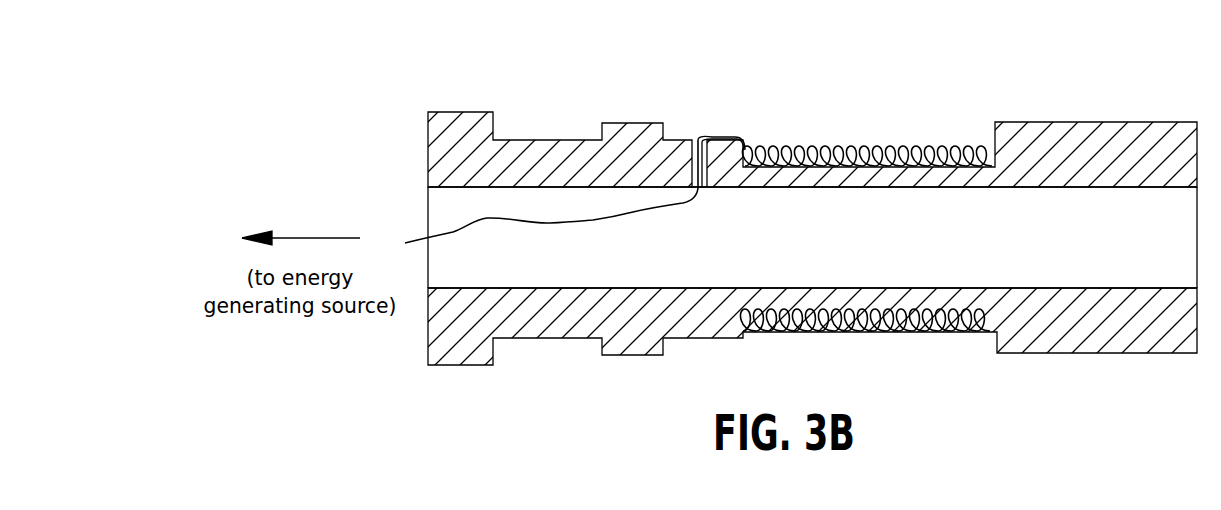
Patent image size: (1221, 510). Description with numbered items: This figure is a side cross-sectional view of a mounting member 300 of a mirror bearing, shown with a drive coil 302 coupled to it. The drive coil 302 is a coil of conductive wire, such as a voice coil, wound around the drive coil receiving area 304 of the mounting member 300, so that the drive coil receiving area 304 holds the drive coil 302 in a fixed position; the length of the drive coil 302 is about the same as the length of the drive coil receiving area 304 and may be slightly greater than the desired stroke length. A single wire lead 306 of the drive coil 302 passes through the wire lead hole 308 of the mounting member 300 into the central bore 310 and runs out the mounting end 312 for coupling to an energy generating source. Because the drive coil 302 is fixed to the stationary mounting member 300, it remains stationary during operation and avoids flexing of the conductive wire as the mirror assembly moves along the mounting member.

The mounting member 300 is at (767, 192).
The drive coil 302 is at (815, 147).
The drive coil receiving area 304 is at (932, 142).
The wire lead 306 is at (548, 223).
The wire lead hole 308 is at (697, 140).
The central bore 310 is at (443, 200).
The mounting end 312 is at (427, 137).